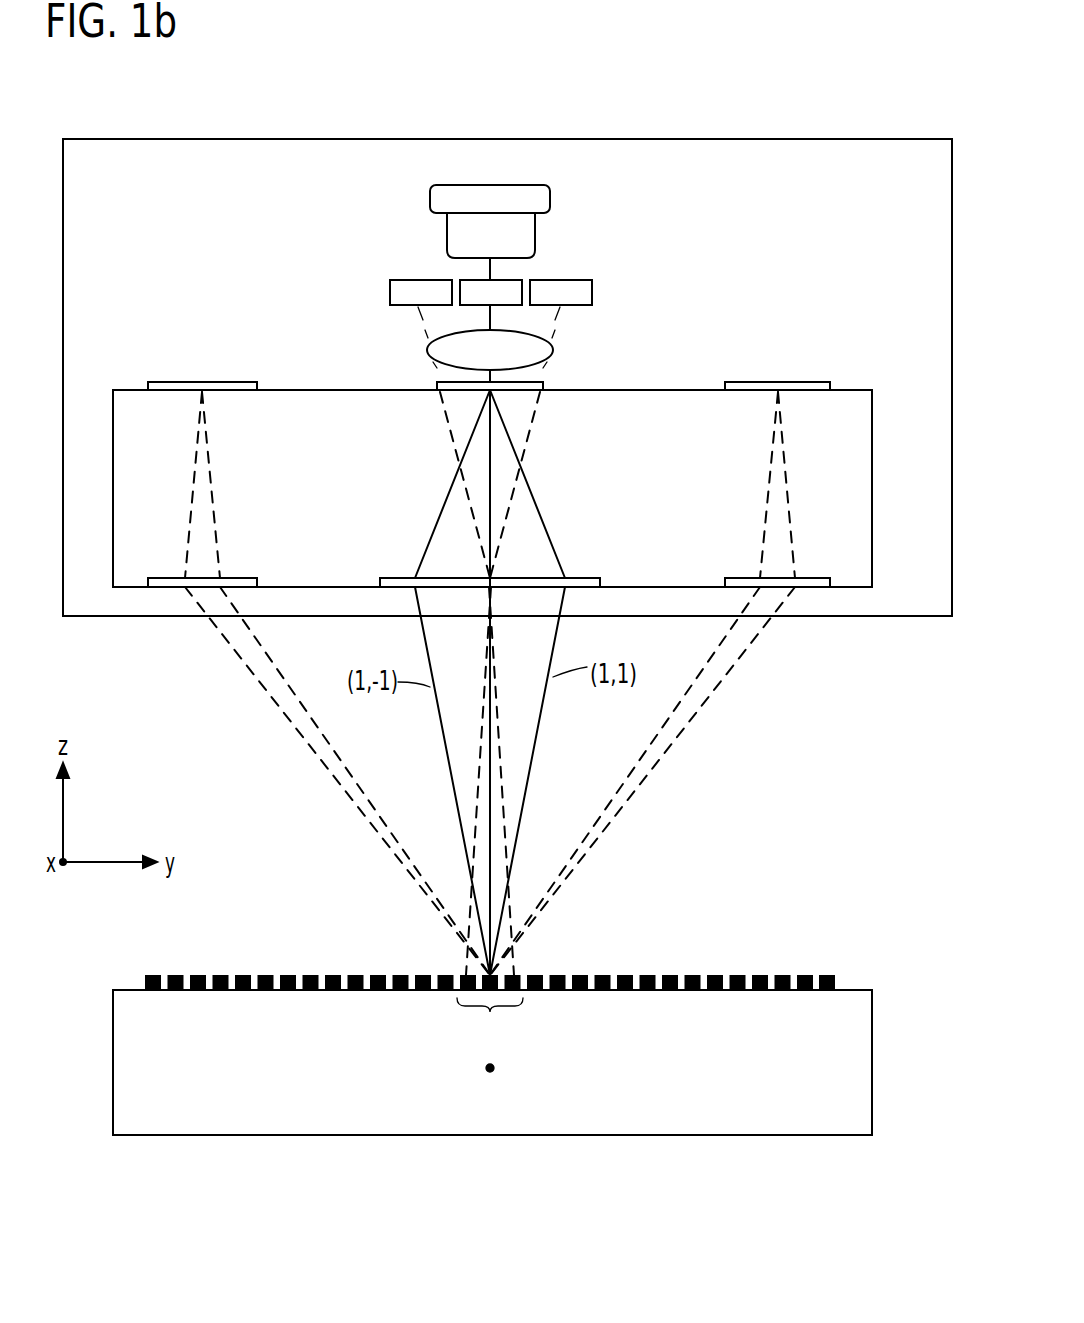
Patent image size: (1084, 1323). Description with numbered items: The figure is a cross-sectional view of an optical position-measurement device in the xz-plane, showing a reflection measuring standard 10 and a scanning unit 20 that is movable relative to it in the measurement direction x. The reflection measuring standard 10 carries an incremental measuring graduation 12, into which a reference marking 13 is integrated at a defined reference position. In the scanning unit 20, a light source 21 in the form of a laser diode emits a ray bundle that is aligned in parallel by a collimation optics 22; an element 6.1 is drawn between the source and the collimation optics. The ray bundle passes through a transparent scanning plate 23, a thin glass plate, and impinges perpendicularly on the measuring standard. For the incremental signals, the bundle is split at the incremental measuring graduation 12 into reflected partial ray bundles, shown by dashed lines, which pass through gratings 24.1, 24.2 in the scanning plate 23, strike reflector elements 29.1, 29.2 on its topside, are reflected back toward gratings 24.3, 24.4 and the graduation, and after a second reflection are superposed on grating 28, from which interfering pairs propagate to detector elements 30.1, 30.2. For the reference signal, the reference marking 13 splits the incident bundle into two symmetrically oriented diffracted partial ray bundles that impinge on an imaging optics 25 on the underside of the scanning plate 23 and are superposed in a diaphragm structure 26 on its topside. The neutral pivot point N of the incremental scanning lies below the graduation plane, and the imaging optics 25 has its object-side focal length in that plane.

The reflection measuring standard 10 is at (159, 1168).
The incremental measuring graduation 12 is at (806, 955).
The reference marking 13 is at (490, 1024).
The scanning unit 20 is at (780, 139).
The light source 21 is at (540, 202).
The collimation optics 22 is at (540, 352).
The scanning plate 23 is at (857, 486).
The grating 24.1 is at (802, 629).
The grating 24.2 is at (182, 629).
The grating 24.3 is at (813, 587).
The grating 24.4 is at (165, 587).
The imaging optics 25 is at (480, 549).
The diaphragm structure 26 is at (450, 390).
The grating 28 is at (395, 578).
The reflector element 29.1 is at (815, 382).
The reflector element 29.2 is at (172, 382).
The detector element 30.1 is at (400, 292).
The detector element 30.2 is at (582, 293).
The illumination unit 6.1 is at (512, 295).
The neutral pivot point N is at (484, 1069).